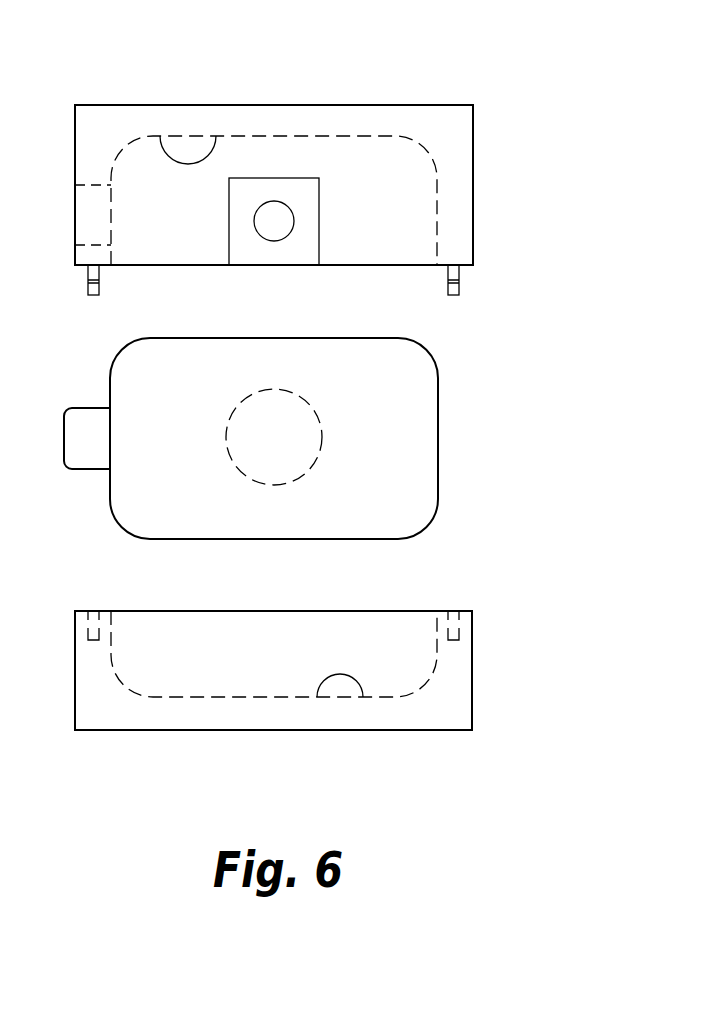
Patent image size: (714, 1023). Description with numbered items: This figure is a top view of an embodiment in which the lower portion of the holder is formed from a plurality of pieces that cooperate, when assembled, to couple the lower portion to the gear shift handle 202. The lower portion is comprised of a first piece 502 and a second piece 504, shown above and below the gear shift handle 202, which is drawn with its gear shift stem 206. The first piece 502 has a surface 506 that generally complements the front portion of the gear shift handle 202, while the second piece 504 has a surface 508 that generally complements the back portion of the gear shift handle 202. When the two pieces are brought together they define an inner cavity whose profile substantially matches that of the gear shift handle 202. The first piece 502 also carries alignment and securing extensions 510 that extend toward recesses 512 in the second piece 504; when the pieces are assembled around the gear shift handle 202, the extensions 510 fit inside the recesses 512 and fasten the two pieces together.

The gear shift handle 202 is at (438, 467).
The gear shift stem 206 is at (237, 407).
The first piece 502 is at (298, 104).
The second piece 504 is at (115, 730).
The surface 506 is at (170, 160).
The surface 508 is at (318, 690).
The extension 510 is at (461, 283).
The recess 512 is at (455, 611).